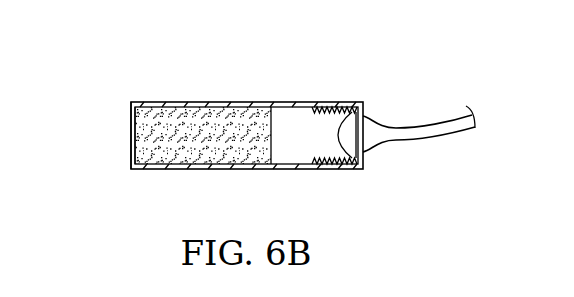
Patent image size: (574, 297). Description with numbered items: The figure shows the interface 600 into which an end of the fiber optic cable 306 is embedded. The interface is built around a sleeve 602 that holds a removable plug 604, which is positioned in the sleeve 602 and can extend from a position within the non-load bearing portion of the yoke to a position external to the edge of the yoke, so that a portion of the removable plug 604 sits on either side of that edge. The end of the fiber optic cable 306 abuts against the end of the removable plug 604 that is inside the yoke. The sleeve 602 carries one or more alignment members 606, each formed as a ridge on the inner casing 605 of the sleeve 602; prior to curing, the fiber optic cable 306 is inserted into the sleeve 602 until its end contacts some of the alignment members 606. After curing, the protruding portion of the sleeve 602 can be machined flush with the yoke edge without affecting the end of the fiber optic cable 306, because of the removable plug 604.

The sample collection tube assembly 600 is at (217, 105).
The sleeve 602 is at (240, 170).
The removable plug 604 is at (177, 157).
The inner casing 605 is at (134, 108).
The alignment member 606 is at (313, 112).
The fiber optic cable 306 is at (435, 132).